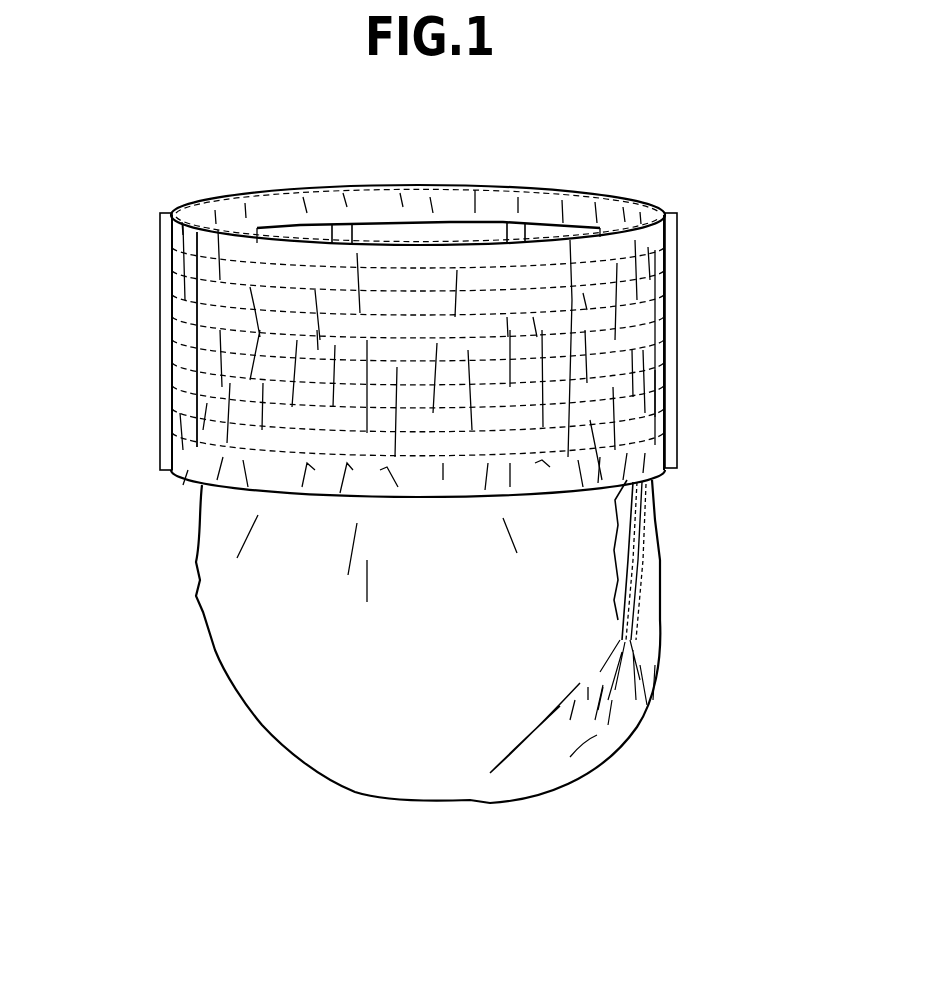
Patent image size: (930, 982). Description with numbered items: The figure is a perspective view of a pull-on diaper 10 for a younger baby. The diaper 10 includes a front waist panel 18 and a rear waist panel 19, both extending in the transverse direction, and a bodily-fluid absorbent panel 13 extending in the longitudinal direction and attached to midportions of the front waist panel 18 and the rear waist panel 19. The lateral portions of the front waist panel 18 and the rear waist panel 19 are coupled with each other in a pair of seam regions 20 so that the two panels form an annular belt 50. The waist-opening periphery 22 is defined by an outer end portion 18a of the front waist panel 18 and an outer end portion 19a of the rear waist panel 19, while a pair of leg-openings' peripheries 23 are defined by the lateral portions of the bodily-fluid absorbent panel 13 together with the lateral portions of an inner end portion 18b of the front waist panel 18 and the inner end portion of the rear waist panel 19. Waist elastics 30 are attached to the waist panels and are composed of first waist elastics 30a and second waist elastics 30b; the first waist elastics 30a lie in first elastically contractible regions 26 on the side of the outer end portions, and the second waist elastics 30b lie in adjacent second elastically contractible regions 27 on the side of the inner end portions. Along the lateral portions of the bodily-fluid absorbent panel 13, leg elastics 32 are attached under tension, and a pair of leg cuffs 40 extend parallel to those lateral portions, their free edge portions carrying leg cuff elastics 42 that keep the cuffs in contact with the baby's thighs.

The diaper 10 is at (665, 135).
The bodily-fluid absorbent panel 13 is at (402, 762).
The front waist panel 18 is at (380, 258).
The outer end portion of the front waist panel 18a is at (533, 243).
The inner end portion of the front waist panel 18b is at (413, 498).
The rear waist panel 19 is at (257, 208).
The outer end portion of the rear waist panel 19a is at (321, 187).
The seam regions 20 is at (170, 280).
The waist-opening periphery 22 is at (443, 240).
The leg-openings' peripheries 23 is at (618, 557).
The first elastically contractible regions 26 is at (177, 270).
The second elastically contractible regions 27 is at (173, 357).
The waist elastics 30 is at (183, 330).
The first waist elastics 30a is at (630, 270).
The second waist elastics 30b is at (657, 365).
The leg elastics 32 is at (642, 587).
The leg cuffs 40 is at (627, 633).
The leg cuff elastics 42 is at (637, 612).
The annular belt 50 is at (206, 198).